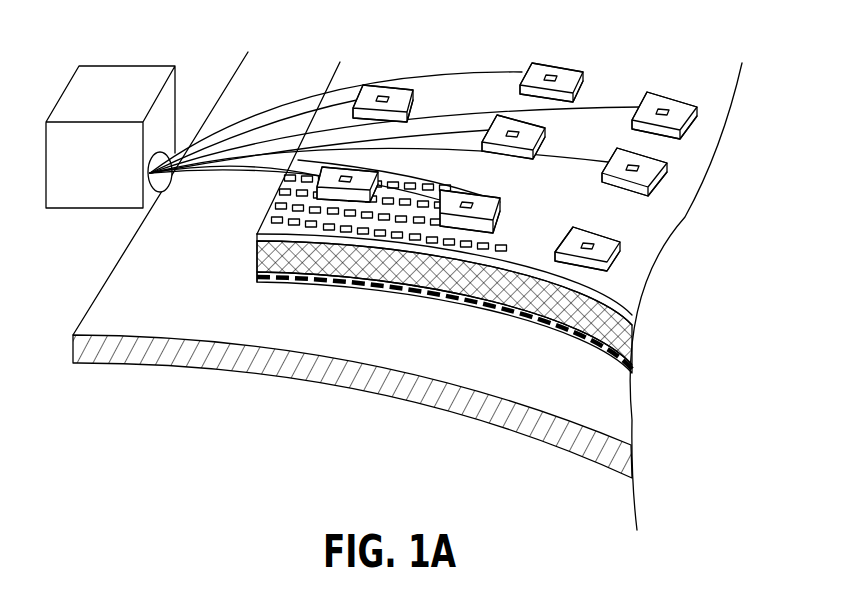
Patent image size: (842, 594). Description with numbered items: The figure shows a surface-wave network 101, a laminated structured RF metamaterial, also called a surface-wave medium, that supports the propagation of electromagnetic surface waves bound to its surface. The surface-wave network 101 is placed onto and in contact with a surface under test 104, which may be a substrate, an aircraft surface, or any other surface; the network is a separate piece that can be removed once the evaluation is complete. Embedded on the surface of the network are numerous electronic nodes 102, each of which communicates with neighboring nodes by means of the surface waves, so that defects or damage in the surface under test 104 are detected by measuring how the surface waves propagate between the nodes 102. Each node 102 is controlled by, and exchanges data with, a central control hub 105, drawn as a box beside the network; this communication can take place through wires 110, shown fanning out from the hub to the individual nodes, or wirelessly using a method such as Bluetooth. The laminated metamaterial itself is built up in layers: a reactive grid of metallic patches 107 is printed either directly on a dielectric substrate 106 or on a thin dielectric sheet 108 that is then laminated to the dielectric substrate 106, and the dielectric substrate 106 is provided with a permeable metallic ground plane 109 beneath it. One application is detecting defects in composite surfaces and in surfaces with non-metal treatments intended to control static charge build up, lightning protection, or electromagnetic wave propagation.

The surface-wave network 101 is at (257, 255).
The electronic node 102 is at (590, 242).
The surface under test (SUT) 104 is at (163, 280).
The central control hub 105 is at (97, 208).
The dielectric substrate 106 is at (628, 338).
The metallic patch 107 is at (498, 247).
The thin dielectric sheet 108 is at (603, 303).
The permeable metallic ground plane 109 is at (600, 358).
The wires 110 is at (437, 73).